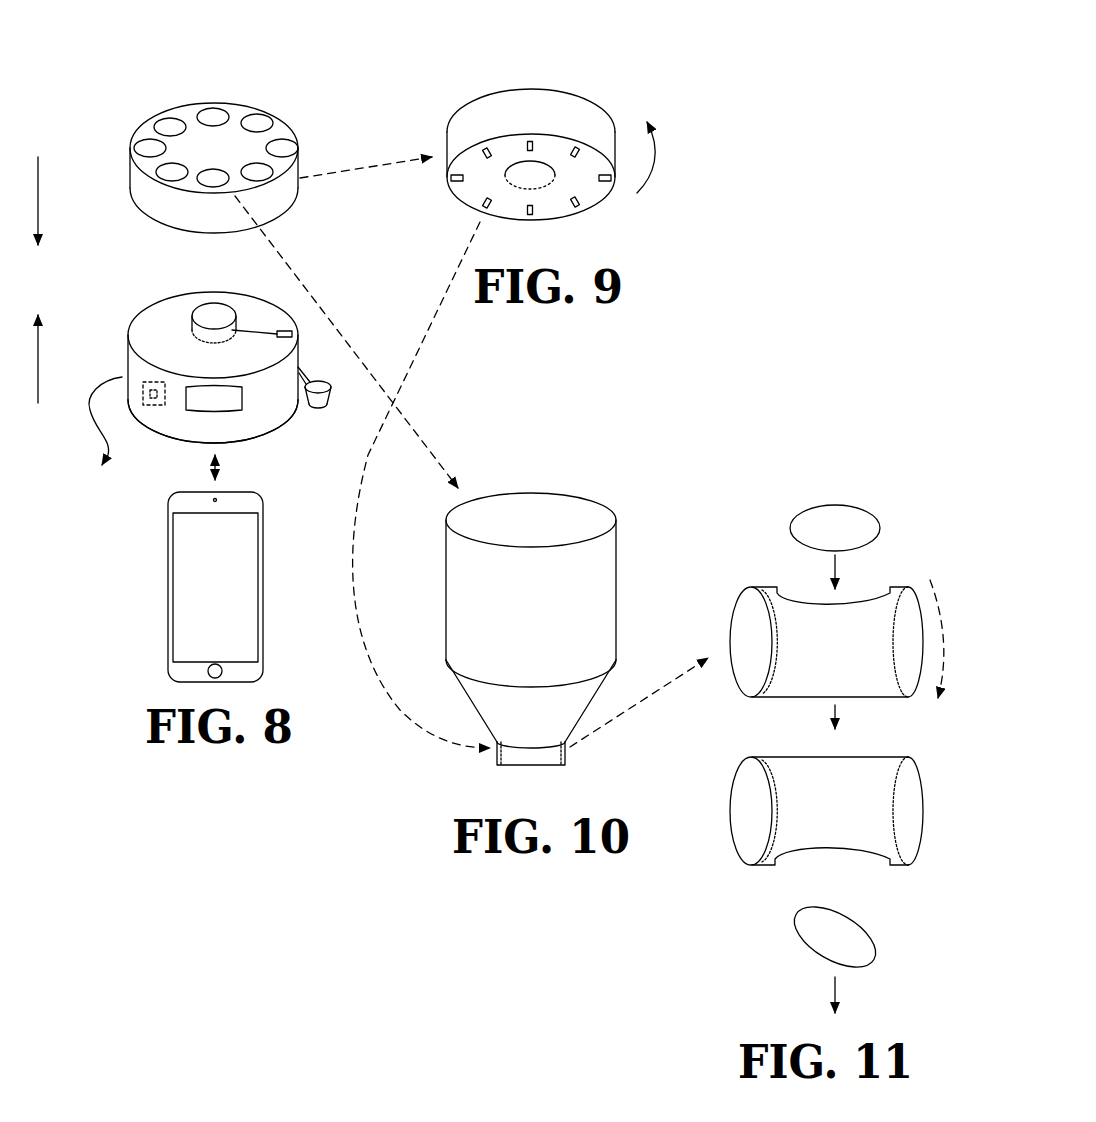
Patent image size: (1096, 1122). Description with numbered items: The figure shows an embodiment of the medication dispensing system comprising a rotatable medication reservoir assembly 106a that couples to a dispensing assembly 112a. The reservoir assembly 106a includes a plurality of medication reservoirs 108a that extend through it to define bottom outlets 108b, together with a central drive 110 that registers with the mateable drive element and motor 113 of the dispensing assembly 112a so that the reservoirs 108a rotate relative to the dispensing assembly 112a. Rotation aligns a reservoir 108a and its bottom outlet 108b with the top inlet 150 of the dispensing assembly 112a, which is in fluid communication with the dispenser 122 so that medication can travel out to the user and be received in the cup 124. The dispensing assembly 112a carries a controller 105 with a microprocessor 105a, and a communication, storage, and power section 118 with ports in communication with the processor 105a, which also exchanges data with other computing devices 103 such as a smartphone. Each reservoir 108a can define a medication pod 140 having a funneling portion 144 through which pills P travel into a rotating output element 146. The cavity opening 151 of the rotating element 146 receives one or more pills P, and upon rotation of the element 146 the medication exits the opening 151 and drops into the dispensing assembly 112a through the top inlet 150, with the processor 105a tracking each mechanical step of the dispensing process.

In FIG. 8, the computing device 103 is at (183, 588).
In FIG. 8, the controller 105 is at (153, 402).
In FIG. 8, the microprocessor 105a is at (153, 395).
In FIG. 8, the medication reservoir assembly 106a is at (313, 159).
In FIG. 9, the medication reservoir assembly 106a is at (600, 91).
In FIG. 8, the medication reservoir 108a is at (170, 125).
In FIG. 9, the bottom outlet 108b is at (576, 150).
In FIG. 9, the central drive 110 is at (533, 167).
In FIG. 8, the dispensing assembly 112a is at (277, 446).
In FIG. 8, the drive element and motor 113 is at (292, 334).
In FIG. 8, the communication, storage, and power section 118 is at (125, 371).
In FIG. 8, the dispenser 122 is at (300, 360).
In FIG. 8, the cup 124 is at (332, 395).
In FIG. 10, the medication pod 140 is at (473, 597).
In FIG. 10, the funneling portion 144 is at (597, 690).
In FIG. 10, the rotating output element 146 is at (493, 752).
In FIG. 11, the rotating output element 146 is at (900, 623).
In FIG. 8, the top inlet 150 is at (300, 338).
In FIG. 11, the cavity opening 151 is at (797, 603).
In FIG. 11, the pill P is at (834, 515).